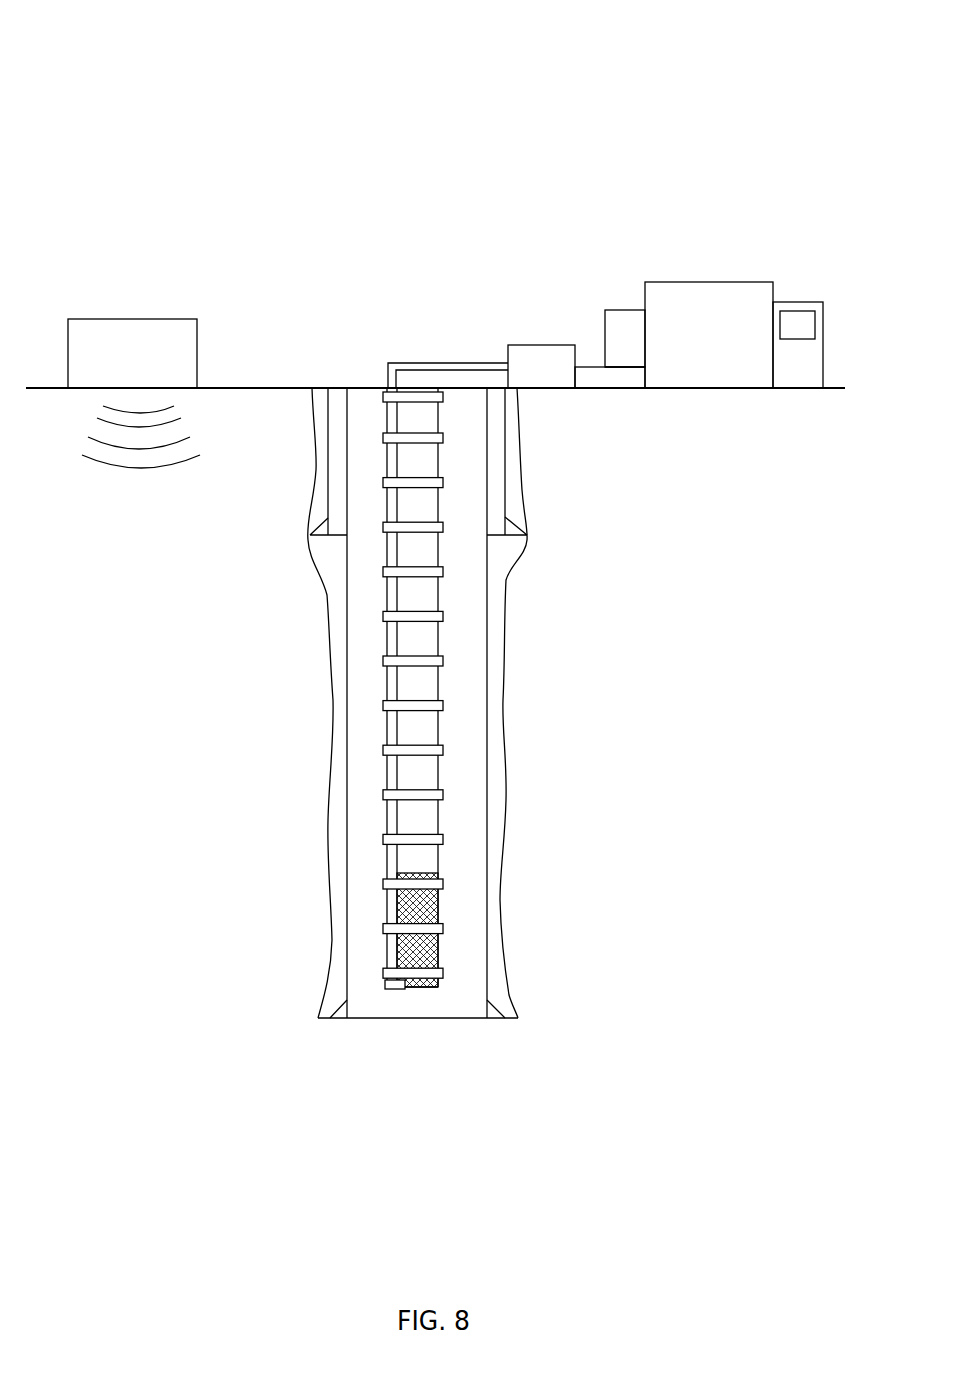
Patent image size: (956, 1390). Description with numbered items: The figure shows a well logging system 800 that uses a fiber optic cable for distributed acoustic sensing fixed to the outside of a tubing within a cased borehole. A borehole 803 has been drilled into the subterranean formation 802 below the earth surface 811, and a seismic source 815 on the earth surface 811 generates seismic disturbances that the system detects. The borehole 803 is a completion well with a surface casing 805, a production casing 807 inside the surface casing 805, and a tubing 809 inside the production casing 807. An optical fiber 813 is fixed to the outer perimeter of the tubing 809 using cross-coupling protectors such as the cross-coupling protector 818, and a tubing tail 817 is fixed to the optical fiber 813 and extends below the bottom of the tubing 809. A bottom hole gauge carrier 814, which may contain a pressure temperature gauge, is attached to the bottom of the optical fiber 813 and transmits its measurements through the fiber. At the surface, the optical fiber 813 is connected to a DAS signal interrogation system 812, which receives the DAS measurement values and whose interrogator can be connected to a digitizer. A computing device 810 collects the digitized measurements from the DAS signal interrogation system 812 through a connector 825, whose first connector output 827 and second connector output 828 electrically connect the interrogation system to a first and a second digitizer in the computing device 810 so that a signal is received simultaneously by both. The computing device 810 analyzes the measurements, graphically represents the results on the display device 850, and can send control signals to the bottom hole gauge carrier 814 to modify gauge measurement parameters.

The well logging system 800 is at (682, 102).
The subterranean formation 802 is at (784, 518).
The borehole 803 is at (326, 614).
The surface casing 805 is at (505, 473).
The production casing 807 is at (487, 587).
The tubing 809 is at (440, 648).
The computing device 810 is at (725, 342).
The earth surface 811 is at (227, 388).
The DAS signal interrogation system 812 is at (557, 382).
The optical fiber 813 is at (387, 502).
The bottom hole gauge carrier 814 is at (405, 989).
The seismic source 815 is at (149, 360).
The tubing tail 817 is at (438, 900).
The cross-coupling protector 818 is at (438, 750).
The connector 825 is at (588, 367).
The first connector output 827 is at (618, 367).
The second connector output 828 is at (635, 310).
The display device 850 is at (795, 311).